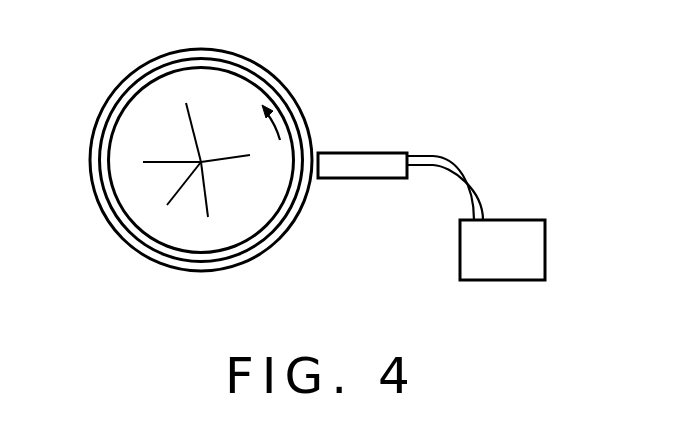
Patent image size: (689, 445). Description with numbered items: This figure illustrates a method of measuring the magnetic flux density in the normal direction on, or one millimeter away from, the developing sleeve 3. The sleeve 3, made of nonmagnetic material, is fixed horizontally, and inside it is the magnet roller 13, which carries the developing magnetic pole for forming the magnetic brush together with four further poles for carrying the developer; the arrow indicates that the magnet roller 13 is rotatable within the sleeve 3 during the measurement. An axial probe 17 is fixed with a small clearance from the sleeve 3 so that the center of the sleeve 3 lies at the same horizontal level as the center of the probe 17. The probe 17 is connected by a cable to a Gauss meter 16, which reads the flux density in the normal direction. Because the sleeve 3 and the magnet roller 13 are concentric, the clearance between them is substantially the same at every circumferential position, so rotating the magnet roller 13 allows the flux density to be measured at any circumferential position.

The developing sleeve 3 is at (292, 93).
The magnet roller 13 is at (126, 170).
The axial probe 17 is at (368, 153).
The Gauss meter 16 is at (545, 249).